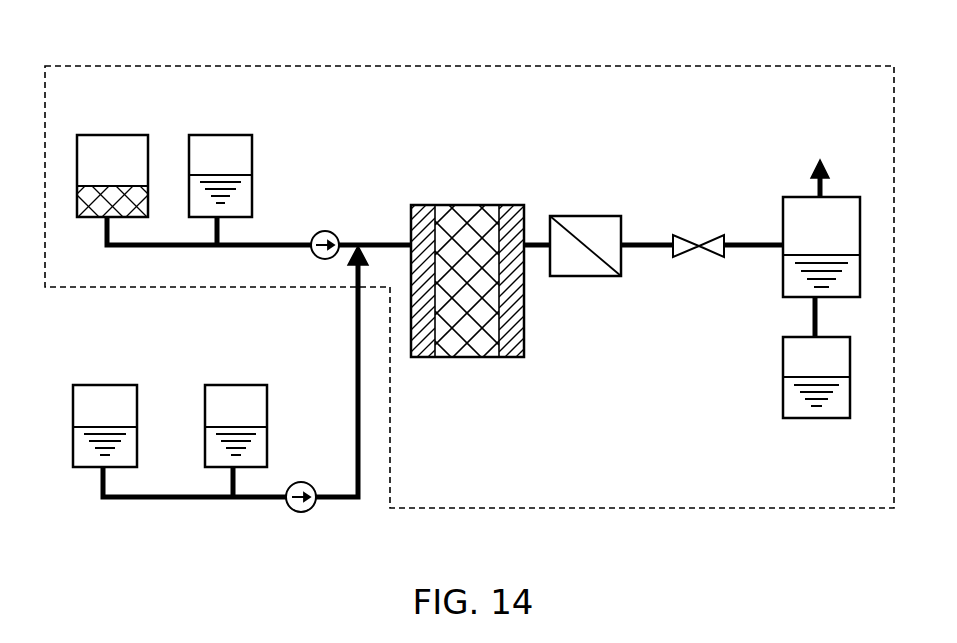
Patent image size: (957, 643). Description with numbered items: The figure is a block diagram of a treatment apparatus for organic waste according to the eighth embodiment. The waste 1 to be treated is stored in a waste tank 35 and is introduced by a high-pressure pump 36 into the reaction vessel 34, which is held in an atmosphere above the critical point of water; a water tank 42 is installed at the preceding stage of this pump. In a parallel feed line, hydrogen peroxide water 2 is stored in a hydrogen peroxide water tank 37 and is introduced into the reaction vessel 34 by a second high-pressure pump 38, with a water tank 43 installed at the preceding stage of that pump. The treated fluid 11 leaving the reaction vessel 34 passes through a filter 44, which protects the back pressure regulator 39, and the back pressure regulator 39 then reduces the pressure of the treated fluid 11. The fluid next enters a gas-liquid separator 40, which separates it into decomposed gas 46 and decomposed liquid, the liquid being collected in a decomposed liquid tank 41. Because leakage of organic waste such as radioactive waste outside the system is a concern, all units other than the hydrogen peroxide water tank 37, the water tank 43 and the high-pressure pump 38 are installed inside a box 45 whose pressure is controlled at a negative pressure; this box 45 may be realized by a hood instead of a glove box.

The waste 1 is at (273, 245).
The hydrogen peroxide water 2 is at (357, 408).
The treated fluid 11 is at (531, 242).
The reaction vessel 34 is at (462, 358).
The waste tank 35 is at (118, 135).
The high-pressure pump 36 is at (324, 231).
The hydrogen peroxide water tank 37 is at (240, 385).
The high-pressure pump 38 is at (299, 512).
The back pressure regulator 39 is at (686, 258).
The gas-liquid separator 40 is at (783, 220).
The decomposed liquid tank 41 is at (808, 419).
The water tank 42 is at (220, 135).
The water tank 43 is at (100, 385).
The filter 44 is at (571, 277).
The box 45 is at (475, 66).
The decomposed gas 46 is at (820, 165).